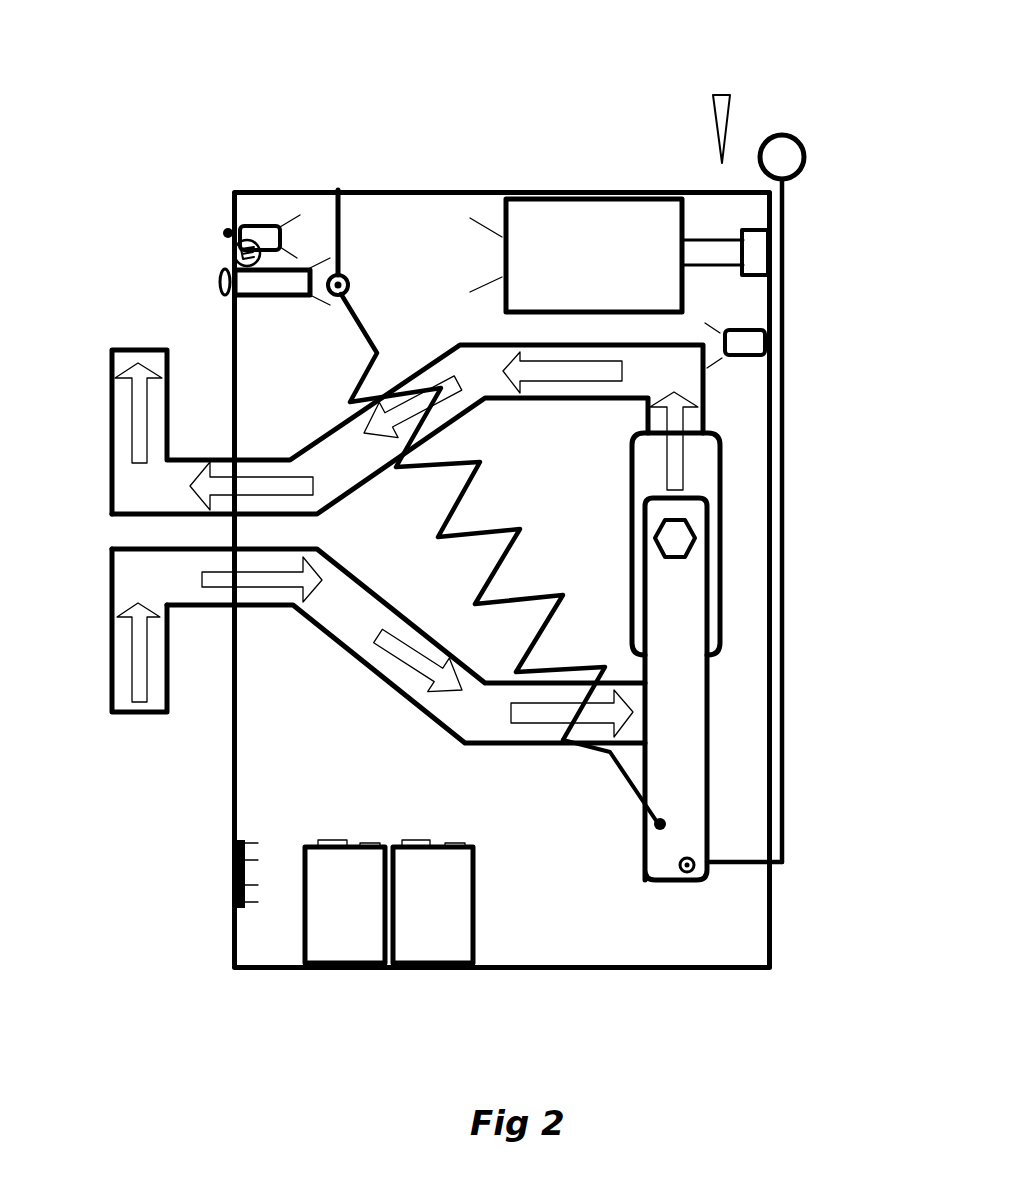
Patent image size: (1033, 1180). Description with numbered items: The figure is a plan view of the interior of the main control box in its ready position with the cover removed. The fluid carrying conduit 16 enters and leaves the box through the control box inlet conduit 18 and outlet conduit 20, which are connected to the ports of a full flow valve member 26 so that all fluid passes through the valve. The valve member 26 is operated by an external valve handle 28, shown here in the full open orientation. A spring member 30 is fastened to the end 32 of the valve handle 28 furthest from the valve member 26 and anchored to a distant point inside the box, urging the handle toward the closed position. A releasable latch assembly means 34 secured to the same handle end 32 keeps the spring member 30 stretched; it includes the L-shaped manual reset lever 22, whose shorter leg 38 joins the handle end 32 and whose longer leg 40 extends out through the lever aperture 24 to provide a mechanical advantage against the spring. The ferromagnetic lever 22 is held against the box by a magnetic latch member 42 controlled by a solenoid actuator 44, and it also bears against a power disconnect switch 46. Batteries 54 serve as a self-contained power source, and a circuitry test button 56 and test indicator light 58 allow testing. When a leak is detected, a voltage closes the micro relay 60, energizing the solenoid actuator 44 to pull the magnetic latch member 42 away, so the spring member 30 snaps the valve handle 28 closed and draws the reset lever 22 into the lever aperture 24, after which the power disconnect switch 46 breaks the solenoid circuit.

The fluid carrying conduit 16 is at (145, 567).
The control box inlet conduit 18 is at (183, 598).
The control box outlet conduit 20 is at (453, 363).
The manual reset lever 22 is at (785, 158).
The lever aperture 24 is at (777, 870).
The full flow valve member 26 is at (690, 482).
The valve handle 28 is at (707, 658).
The spring member 30 is at (497, 568).
The end of valve handle 32 is at (657, 863).
The releasable latch assembly means 34 is at (722, 95).
The shorter leg 38 is at (735, 863).
The longer leg 40 is at (783, 573).
The magnetic latch member 42 is at (758, 255).
The solenoid actuator 44 is at (598, 243).
The power disconnect switch 46 is at (752, 340).
The self-contained power source 54 is at (412, 942).
The circuitry test button 56 is at (250, 233).
The test indicator light 58 is at (224, 275).
The micro relay 60 is at (230, 862).